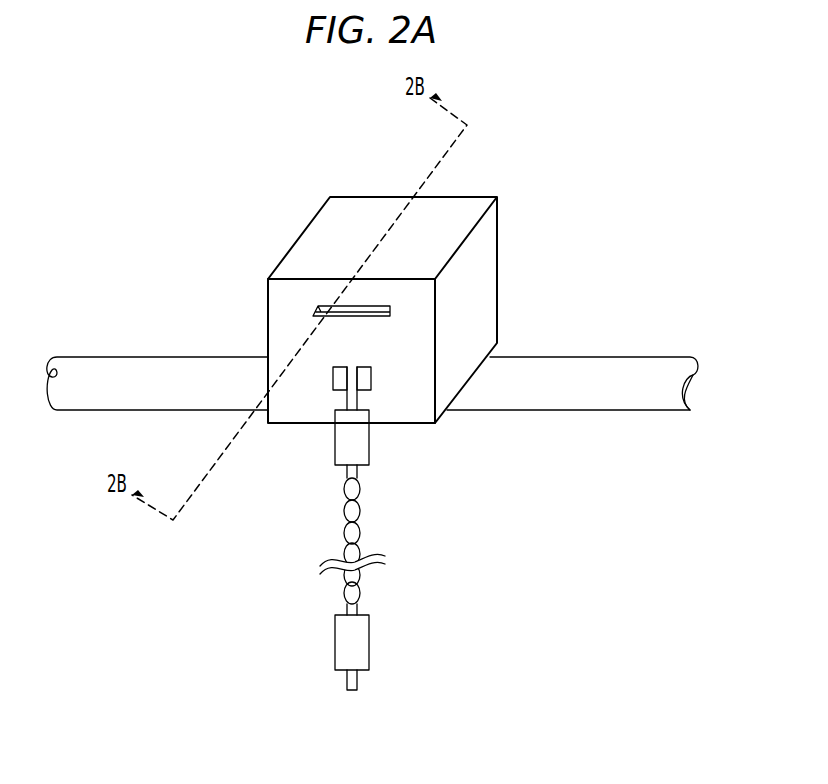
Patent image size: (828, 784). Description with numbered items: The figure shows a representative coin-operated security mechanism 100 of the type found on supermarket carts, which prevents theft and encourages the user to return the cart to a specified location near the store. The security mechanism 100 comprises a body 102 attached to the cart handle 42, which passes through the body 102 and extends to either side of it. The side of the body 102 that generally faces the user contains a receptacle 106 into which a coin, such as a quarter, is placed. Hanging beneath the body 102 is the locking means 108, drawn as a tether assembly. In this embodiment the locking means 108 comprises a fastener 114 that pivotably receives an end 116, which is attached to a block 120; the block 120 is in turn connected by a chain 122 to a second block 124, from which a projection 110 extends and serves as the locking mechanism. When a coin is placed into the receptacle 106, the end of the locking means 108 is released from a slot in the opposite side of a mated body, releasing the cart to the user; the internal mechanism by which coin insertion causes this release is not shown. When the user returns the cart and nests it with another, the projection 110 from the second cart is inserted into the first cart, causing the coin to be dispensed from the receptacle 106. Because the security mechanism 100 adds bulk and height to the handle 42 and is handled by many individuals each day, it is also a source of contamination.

The coin-operated security mechanism 100 is at (175, 163).
The body 102 is at (497, 232).
The receptacle 106 is at (378, 311).
The handle 42 is at (96, 357).
The fastener 114 is at (368, 380).
The end 116 is at (353, 398).
The locking means 108 is at (392, 613).
The block 120 is at (335, 447).
The chain 122 is at (345, 537).
The second block 124 is at (335, 646).
The projection 110 is at (358, 684).